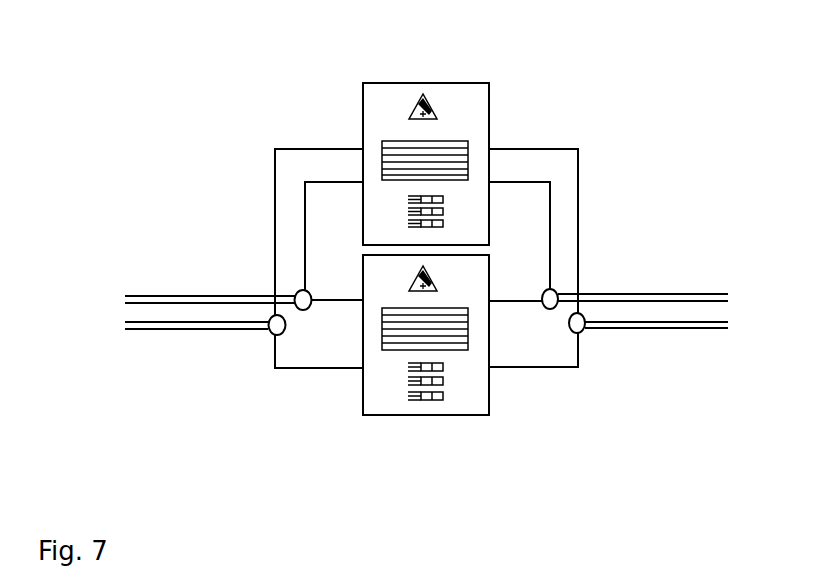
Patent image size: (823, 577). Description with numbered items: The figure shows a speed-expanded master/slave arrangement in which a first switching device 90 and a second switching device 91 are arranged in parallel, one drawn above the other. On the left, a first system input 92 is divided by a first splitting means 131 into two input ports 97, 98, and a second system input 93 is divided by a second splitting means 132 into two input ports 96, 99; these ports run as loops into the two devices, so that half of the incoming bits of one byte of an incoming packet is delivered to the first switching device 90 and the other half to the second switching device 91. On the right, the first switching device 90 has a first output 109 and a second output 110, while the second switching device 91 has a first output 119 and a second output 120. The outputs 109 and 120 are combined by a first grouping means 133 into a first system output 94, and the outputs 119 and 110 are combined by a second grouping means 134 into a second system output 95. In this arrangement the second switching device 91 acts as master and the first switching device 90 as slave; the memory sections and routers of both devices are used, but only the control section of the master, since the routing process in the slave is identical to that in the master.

The first switching device 90 is at (372, 92).
The second switching device 91 is at (393, 402).
The first system input 92 is at (156, 290).
The second system input 93 is at (250, 332).
The first system output 94 is at (660, 285).
The second system output 95 is at (690, 335).
The input port 96 is at (287, 145).
The input port 97 is at (350, 188).
The input port 98 is at (320, 296).
The input port 99 is at (317, 373).
The first output 109 is at (517, 143).
The second output 110 is at (523, 185).
The first output 119 is at (502, 296).
The second output 120 is at (523, 372).
The first splitting means 131 is at (292, 288).
The second splitting means 132 is at (285, 335).
The first grouping means 133 is at (543, 307).
The second grouping means 134 is at (583, 335).